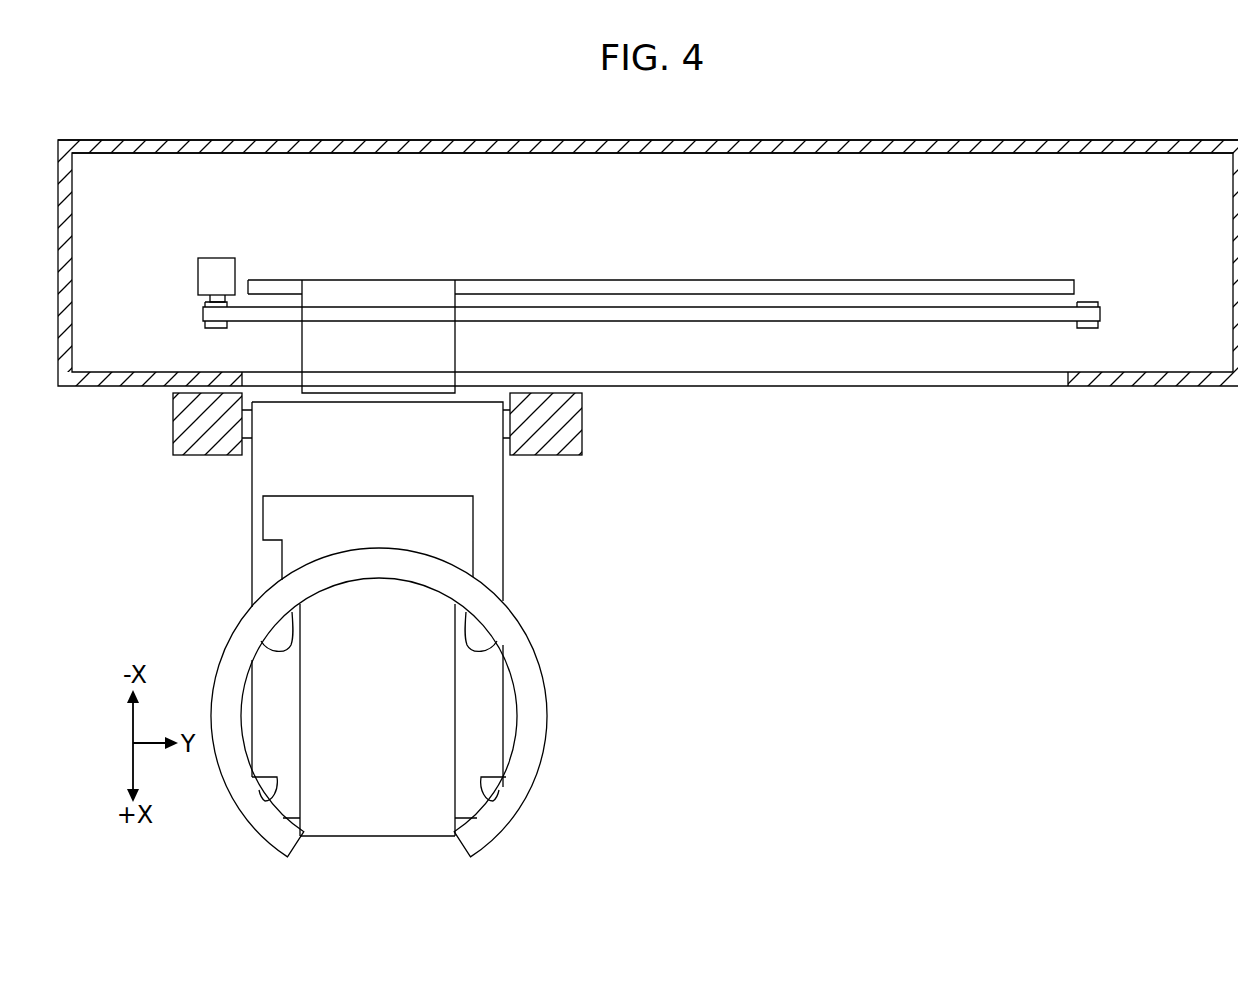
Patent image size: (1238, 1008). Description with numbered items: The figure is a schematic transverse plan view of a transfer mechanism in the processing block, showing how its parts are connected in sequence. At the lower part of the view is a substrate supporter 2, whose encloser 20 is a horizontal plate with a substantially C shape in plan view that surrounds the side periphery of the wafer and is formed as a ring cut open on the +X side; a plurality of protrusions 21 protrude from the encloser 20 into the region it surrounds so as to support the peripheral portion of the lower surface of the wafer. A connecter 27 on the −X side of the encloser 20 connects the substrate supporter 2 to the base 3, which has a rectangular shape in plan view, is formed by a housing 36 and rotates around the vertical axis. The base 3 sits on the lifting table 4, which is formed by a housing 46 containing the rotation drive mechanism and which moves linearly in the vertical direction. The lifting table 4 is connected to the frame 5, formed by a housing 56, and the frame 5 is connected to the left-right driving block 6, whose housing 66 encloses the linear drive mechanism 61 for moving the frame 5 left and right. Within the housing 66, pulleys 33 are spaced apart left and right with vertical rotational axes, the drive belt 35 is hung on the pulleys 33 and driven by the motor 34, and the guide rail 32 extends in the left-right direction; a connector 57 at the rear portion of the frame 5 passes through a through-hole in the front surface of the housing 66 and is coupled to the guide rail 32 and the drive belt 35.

The substrate supporter 2 is at (426, 649).
The base 3 is at (398, 838).
The lifting table 4 is at (503, 550).
The frame 5 is at (582, 428).
The left-right driving block 6 is at (1083, 140).
The encloser 20 is at (548, 717).
The protrusions 21 is at (485, 635).
The connecter 27 is at (263, 516).
The guide rail 32 is at (833, 280).
The pulleys 33 is at (210, 327).
The motor 34 is at (198, 277).
The drive belt 35 is at (838, 323).
The housing 36 is at (326, 840).
The housing 46 is at (252, 570).
The housing 56 is at (173, 428).
The connector 57 is at (457, 298).
The linear drive mechanism 61 is at (631, 261).
The housing 66 is at (723, 140).